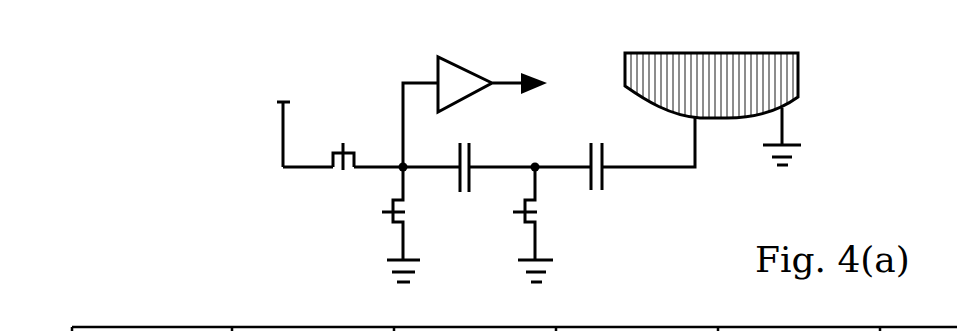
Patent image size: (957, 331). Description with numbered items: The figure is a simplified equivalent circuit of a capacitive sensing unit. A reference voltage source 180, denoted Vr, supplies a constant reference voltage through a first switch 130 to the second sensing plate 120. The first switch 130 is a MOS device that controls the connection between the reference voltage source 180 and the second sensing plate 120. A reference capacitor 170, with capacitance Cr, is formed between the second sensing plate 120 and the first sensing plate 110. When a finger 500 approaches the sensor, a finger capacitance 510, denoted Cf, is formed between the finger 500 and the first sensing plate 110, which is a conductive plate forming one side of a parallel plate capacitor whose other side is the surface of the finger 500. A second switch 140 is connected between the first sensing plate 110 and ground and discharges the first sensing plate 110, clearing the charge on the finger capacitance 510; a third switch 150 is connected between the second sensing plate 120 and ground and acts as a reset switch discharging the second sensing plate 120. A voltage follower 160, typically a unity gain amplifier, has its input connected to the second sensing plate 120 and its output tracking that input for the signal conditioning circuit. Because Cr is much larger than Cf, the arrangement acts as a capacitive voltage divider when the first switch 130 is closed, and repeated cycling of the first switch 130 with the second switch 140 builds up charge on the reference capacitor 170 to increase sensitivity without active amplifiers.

The first sensing plate 110 is at (536, 166).
The second sensing plate 120 is at (405, 166).
The first switch 130 is at (336, 172).
The second switch 140 is at (540, 212).
The third switch 150 is at (396, 220).
The voltage follower 160 is at (438, 70).
The reference capacitor 170 is at (455, 194).
The reference voltage source 180 is at (281, 103).
The finger 500 is at (747, 107).
The finger capacitance 510 is at (591, 143).